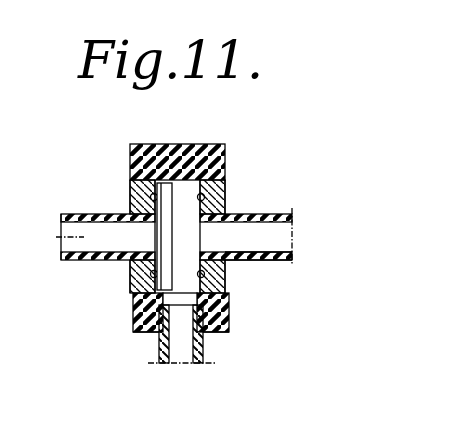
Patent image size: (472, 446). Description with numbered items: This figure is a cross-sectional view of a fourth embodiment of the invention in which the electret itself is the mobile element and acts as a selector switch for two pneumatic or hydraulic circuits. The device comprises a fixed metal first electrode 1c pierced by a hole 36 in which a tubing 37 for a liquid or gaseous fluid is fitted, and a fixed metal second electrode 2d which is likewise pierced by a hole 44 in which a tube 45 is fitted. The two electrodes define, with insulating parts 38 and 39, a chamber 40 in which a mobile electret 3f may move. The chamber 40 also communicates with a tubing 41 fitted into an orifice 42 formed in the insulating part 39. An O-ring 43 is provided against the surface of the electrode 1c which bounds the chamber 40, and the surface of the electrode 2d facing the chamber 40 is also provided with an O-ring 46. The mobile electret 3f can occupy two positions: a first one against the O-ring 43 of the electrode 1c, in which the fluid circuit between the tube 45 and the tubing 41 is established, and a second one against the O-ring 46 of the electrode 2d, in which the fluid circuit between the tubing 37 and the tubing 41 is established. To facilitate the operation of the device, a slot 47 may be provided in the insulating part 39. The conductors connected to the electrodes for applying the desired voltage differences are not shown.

The insulating part 38 is at (170, 150).
The O-ring 43 is at (137, 190).
The O-ring 46 is at (216, 186).
The second electrode 2d is at (222, 197).
The hole 36 is at (137, 272).
The chamber 40 is at (208, 233).
The tubing 37 is at (75, 215).
The tube 45 is at (275, 214).
The hole 44 is at (262, 252).
The first electrode 1c is at (157, 194).
The electret 3f is at (137, 298).
The insulating part 39 is at (224, 305).
The orifice 42 is at (175, 307).
The tubing 41 is at (162, 352).
The slot 47 is at (223, 323).